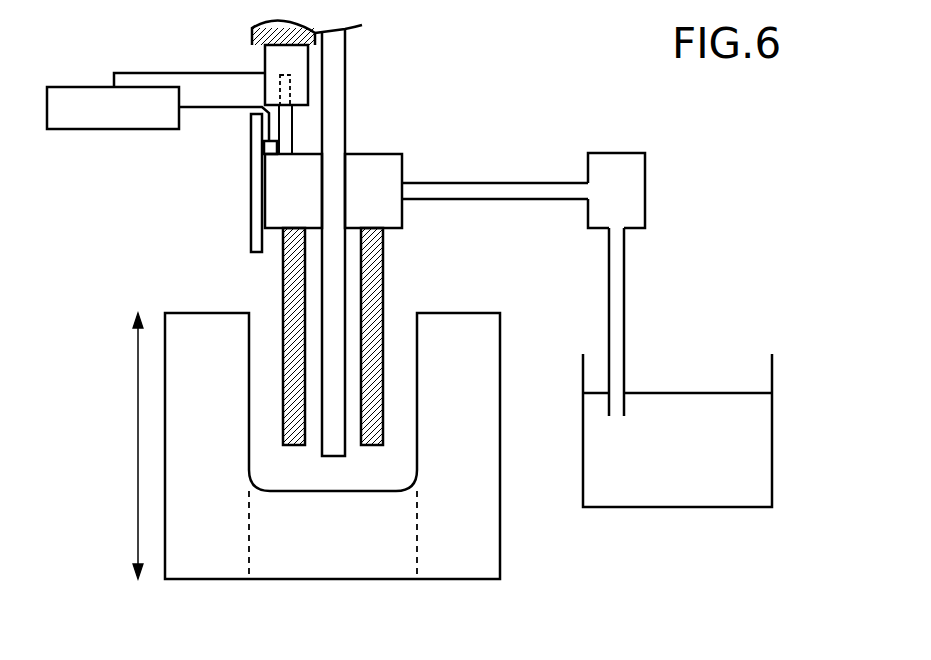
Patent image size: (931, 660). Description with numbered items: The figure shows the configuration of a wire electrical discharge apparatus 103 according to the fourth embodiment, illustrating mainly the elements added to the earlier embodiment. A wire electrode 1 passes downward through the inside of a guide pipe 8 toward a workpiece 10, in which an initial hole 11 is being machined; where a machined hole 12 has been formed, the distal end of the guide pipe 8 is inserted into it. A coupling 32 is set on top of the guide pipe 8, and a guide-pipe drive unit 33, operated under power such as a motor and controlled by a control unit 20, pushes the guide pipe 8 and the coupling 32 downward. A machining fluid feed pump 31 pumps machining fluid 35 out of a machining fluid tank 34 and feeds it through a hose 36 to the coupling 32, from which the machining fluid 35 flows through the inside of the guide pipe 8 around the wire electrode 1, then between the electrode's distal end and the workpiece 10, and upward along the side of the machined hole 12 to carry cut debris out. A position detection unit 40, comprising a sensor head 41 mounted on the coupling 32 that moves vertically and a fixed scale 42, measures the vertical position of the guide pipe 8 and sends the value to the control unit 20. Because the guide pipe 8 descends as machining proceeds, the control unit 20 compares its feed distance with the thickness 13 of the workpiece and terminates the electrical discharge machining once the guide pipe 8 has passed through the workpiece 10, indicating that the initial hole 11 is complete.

The wire electrode 1 is at (345, 76).
The guide pipe 8 is at (283, 295).
The workpiece 10 is at (500, 527).
The initial hole 11 is at (312, 532).
The machined hole 12 is at (382, 491).
The thickness of the workpiece 13 is at (137, 438).
The control unit 20 is at (78, 86).
The machining fluid feed pump 31 is at (618, 153).
The coupling 32 is at (373, 154).
The guide-pipe drive unit 33 is at (265, 88).
The machining fluid tank 34 is at (772, 436).
The machining fluid 35 is at (699, 401).
The hose 36 is at (505, 183).
The position detection unit 40 is at (219, 182).
The sensor head 41 is at (264, 148).
The scale 42 is at (251, 121).
The wire electrical discharge apparatus 103 is at (553, 88).